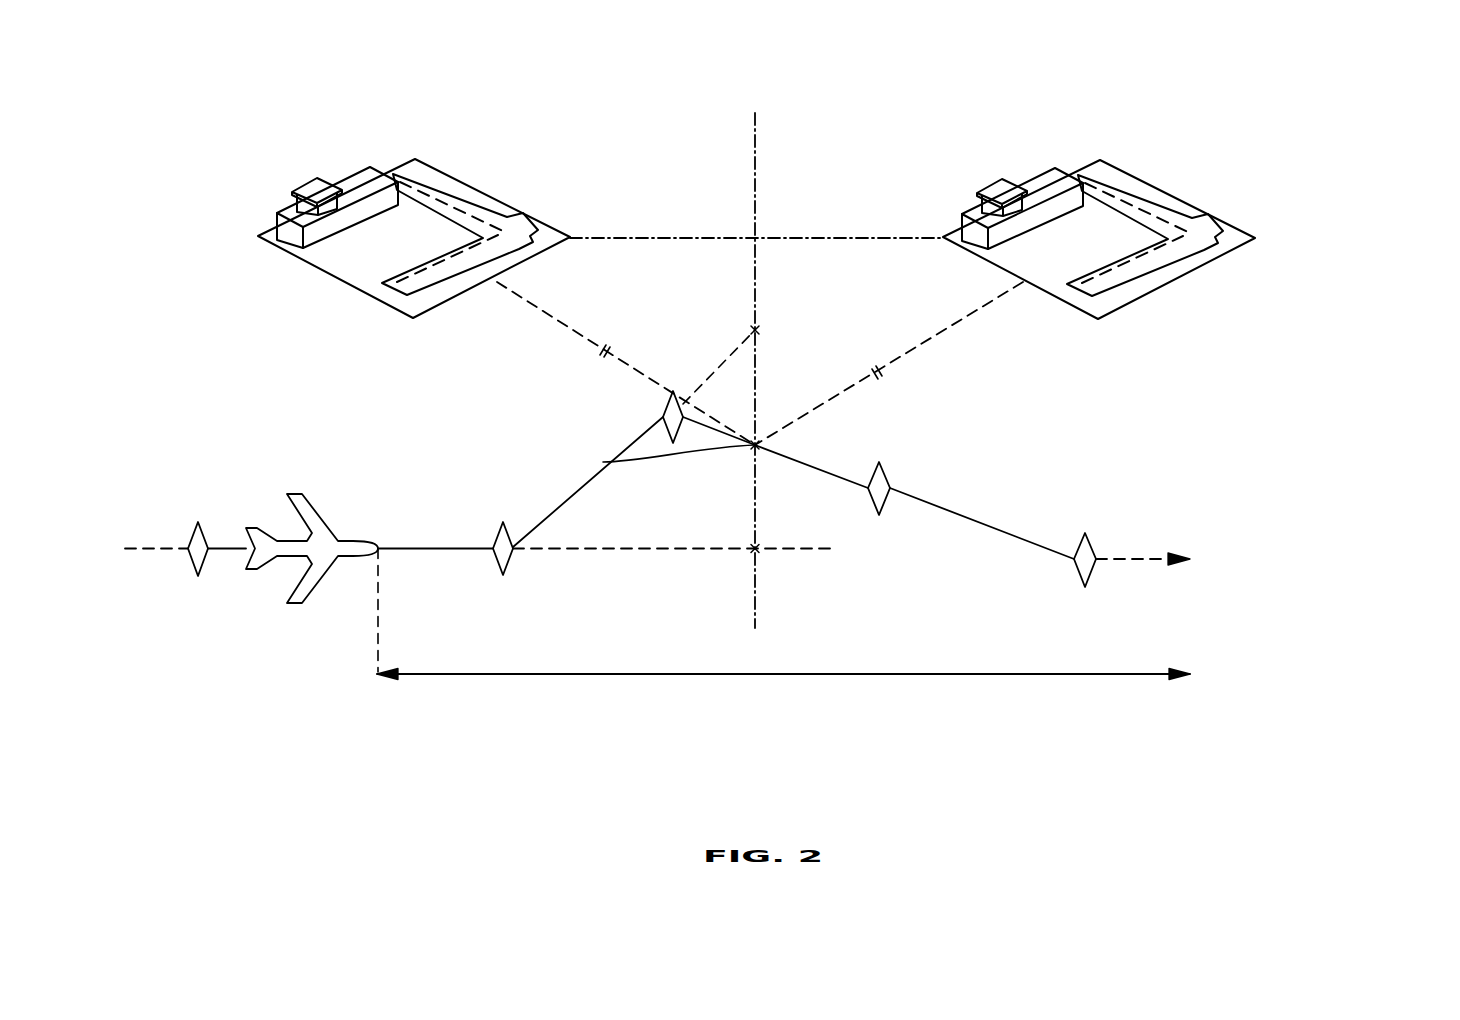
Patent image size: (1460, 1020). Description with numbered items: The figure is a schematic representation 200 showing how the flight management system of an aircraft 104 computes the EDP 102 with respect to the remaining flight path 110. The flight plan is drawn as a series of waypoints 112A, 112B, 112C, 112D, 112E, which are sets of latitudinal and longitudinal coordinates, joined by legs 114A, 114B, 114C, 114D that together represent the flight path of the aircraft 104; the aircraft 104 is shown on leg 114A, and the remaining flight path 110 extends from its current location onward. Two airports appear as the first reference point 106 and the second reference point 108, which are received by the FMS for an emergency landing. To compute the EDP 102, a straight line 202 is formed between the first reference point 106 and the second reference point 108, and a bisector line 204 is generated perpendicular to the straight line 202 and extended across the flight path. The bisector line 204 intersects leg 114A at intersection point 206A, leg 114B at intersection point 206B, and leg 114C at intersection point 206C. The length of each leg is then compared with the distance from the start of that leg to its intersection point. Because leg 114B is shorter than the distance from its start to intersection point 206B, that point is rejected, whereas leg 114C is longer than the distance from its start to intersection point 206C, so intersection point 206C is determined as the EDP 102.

The EDP 102 is at (757, 449).
The aircraft 104 is at (305, 512).
The first reference point 106 is at (352, 278).
The second reference point 108 is at (1162, 278).
The remaining flight path 110 is at (790, 676).
The waypoint 112A is at (198, 577).
The waypoint 112B is at (508, 563).
The waypoint 112C is at (673, 389).
The waypoint 112D is at (887, 477).
The waypoint 112E is at (1092, 548).
The leg 114A is at (440, 551).
The leg 114B is at (580, 493).
The leg 114C is at (793, 458).
The leg 114D is at (982, 523).
The schematic representation 200 is at (985, 730).
The straight line 202 is at (662, 236).
The bisector line 204 is at (756, 140).
The intersection point 206A is at (758, 550).
The intersection point 206B is at (757, 328).
The intersection point 206C is at (603, 462).